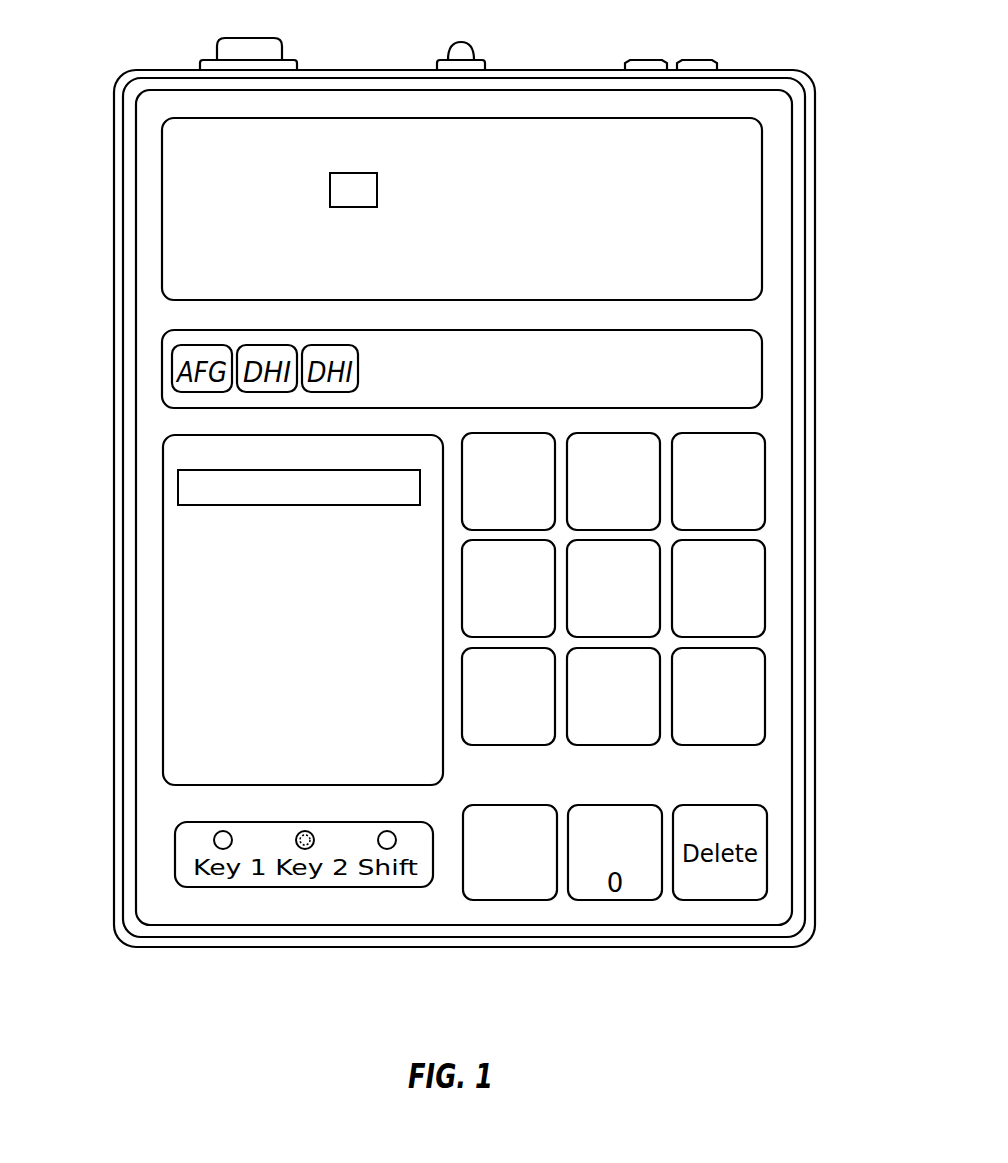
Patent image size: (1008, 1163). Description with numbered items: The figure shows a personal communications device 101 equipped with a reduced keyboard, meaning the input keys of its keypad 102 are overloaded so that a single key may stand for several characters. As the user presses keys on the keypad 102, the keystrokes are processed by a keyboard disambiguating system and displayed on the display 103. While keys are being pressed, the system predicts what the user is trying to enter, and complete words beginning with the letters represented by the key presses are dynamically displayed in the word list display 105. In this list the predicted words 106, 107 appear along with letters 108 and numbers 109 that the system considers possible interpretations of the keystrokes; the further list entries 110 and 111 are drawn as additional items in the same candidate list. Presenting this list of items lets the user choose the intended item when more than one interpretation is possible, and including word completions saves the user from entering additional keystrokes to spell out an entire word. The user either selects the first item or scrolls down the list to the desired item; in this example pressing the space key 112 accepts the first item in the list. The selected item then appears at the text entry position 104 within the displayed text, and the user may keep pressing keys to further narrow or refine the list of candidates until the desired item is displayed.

The personal communications device 101 is at (162, 64).
The keypad 102 is at (825, 435).
The display 103 is at (162, 162).
The text entry position 104 is at (377, 190).
The word list display 105 is at (165, 452).
The predicted word 106 is at (210, 470).
The predicted word 107 is at (178, 487).
The letters 108 is at (180, 523).
The numbers 109 is at (180, 553).
The fourth candidate entry 110 is at (180, 585).
The cancel option 111 is at (180, 618).
The space key 112 is at (490, 902).